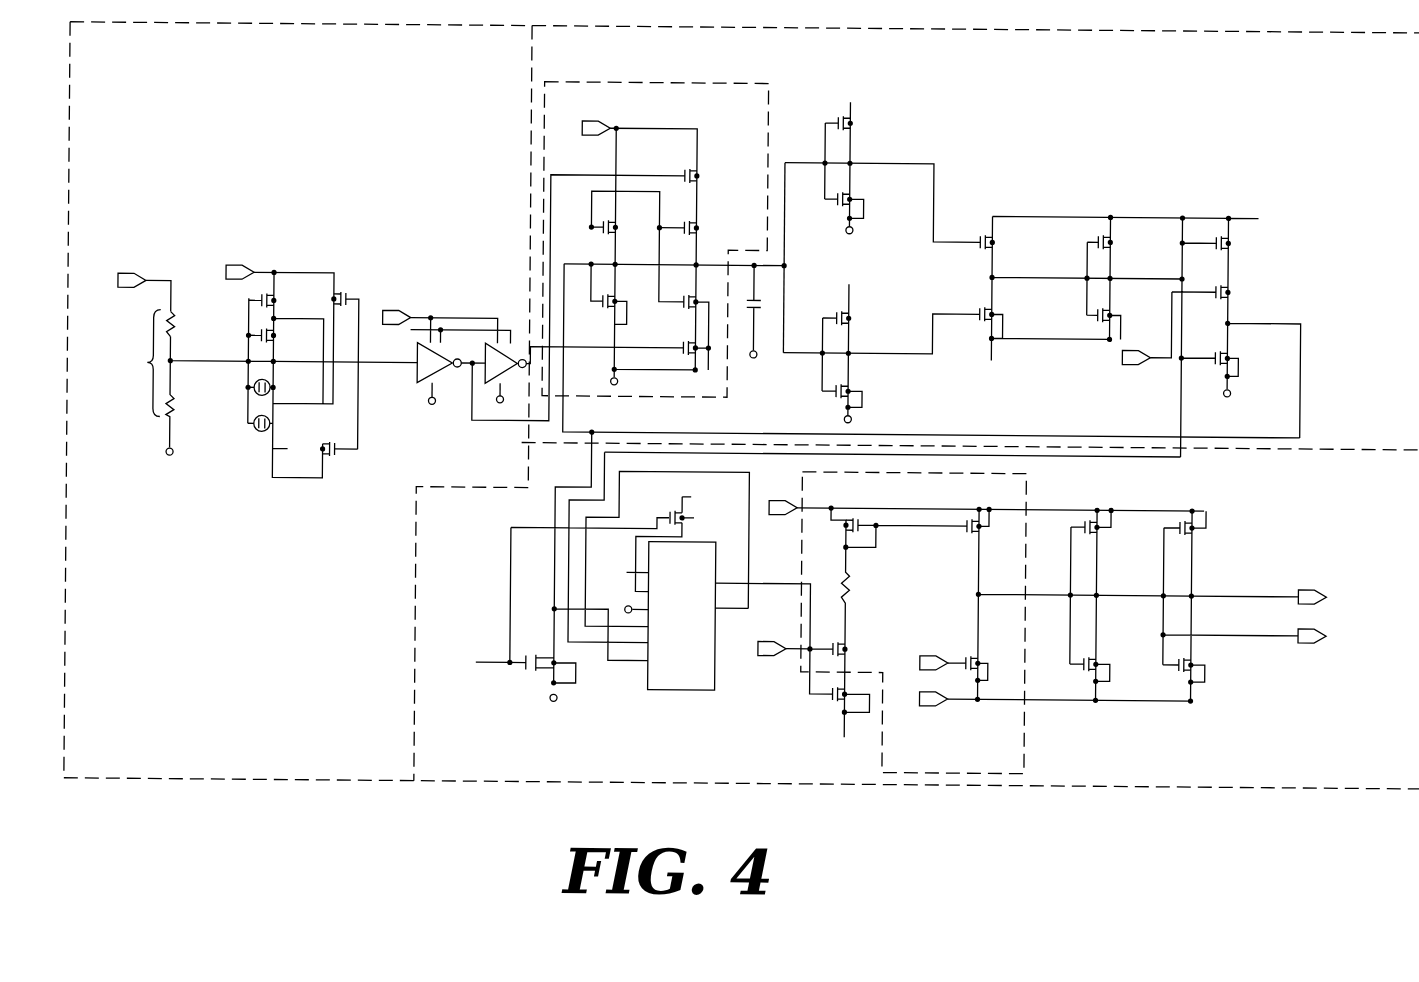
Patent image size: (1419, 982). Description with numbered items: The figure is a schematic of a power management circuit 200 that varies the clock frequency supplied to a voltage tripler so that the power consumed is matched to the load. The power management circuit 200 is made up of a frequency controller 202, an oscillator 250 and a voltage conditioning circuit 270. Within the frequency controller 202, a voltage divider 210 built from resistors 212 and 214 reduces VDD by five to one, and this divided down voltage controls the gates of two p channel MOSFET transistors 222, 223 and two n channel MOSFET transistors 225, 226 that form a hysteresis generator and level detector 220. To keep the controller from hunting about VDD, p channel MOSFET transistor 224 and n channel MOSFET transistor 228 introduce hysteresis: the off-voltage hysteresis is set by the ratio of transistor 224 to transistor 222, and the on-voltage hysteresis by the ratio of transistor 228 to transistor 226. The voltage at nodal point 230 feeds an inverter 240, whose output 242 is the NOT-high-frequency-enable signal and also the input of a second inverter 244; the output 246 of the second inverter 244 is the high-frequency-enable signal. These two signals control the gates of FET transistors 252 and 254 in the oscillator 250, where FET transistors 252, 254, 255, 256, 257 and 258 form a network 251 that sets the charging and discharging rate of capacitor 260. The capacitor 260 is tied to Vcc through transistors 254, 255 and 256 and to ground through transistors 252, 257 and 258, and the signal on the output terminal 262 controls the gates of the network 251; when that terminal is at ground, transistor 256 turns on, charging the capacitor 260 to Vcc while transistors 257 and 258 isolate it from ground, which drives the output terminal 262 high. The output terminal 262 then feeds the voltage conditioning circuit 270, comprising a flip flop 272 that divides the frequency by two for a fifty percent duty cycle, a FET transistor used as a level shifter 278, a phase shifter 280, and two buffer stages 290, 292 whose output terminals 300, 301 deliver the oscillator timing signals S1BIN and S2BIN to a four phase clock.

The power management circuit 200 is at (302, 810).
The frequency controller 202 is at (217, 784).
The voltage divider 210 is at (150, 367).
The resistor 212 is at (177, 314).
The resistor 214 is at (184, 465).
The hysteresis generator and level detector 220 is at (370, 271).
The p channel MOSFET transistor 222 is at (250, 301).
The p channel MOSFET transistor 223 is at (248, 343).
The p channel MOSFET transistor 224 is at (340, 463).
The n channel MOSFET transistor 225 is at (248, 391).
The n channel MOSFET transistor 226 is at (251, 436).
The n channel MOSFET transistor 228 is at (353, 299).
The nodal point 230 is at (280, 367).
The inverter 240 is at (416, 385).
The output of inverter 242 is at (470, 416).
The second inverter 244 is at (513, 385).
The output of second inverter 246 is at (531, 345).
The oscillator 250 is at (1390, 410).
The network 251 is at (743, 83).
The FET transistor 252 is at (681, 345).
The FET transistor 254 is at (700, 162).
The FET transistor 255 is at (698, 222).
The FET transistor 256 is at (590, 228).
The FET transistor 257 is at (682, 294).
The FET transistor 258 is at (595, 311).
The capacitor 260 is at (771, 304).
The output terminal 262 is at (1300, 319).
The voltage conditioning circuit 270 is at (1387, 500).
The flip flop 272 is at (687, 692).
The level shifter 278 is at (853, 706).
The phase shifter 280 is at (1027, 496).
The buffer stage 290 is at (1100, 506).
The buffer stage 292 is at (1195, 506).
The output terminal 300 is at (1330, 596).
The output terminal 301 is at (1330, 634).